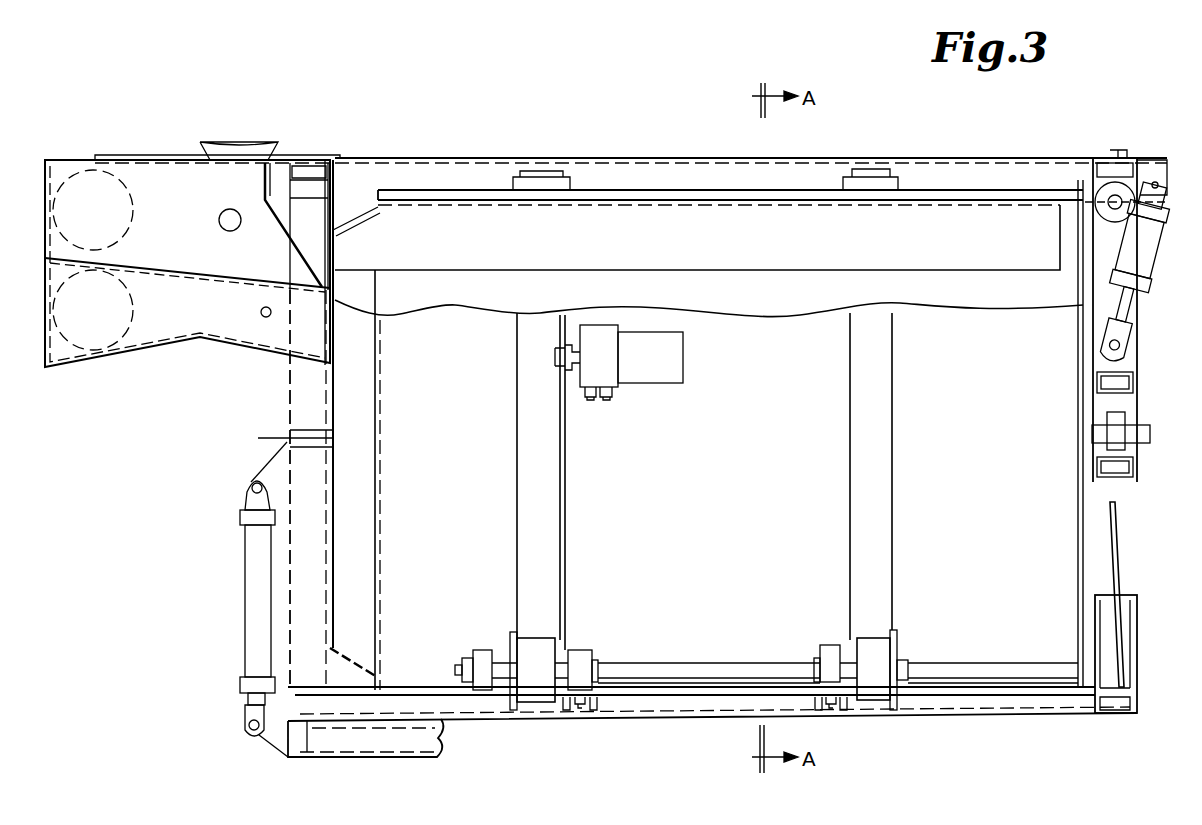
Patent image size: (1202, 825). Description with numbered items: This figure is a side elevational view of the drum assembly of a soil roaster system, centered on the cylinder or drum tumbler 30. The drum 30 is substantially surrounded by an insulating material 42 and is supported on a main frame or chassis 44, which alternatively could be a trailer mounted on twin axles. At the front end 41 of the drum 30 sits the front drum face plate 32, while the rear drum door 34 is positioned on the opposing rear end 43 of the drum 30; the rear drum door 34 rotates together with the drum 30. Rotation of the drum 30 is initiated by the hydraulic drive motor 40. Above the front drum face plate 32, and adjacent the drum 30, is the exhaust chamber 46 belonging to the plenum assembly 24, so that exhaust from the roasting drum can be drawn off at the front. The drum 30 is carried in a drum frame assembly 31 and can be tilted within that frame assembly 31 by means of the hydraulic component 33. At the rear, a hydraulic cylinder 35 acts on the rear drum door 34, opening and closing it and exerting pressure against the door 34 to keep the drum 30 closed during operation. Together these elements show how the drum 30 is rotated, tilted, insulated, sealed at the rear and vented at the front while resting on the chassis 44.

The plenum assembly 24 is at (178, 128).
The drum 30 is at (990, 605).
The drum frame assembly 31 is at (655, 705).
The front drum face plate 32 is at (334, 422).
The hydraulic component 33 is at (250, 582).
The rear drum door 34 is at (1120, 570).
The hydraulic cylinder 35 is at (1147, 262).
The hydraulic drive motor 40 is at (655, 368).
The front end 41 is at (205, 458).
The insulating material 42 is at (752, 190).
The rear end 43 is at (1128, 508).
The main frame 44 is at (355, 740).
The exhaust chamber 46 is at (147, 323).